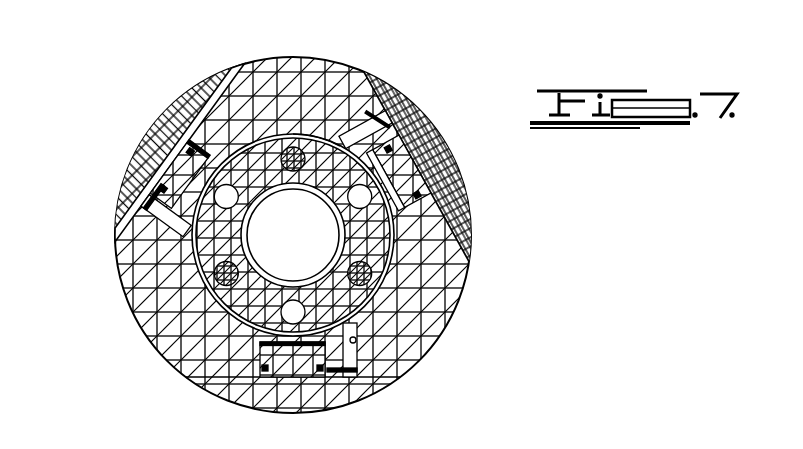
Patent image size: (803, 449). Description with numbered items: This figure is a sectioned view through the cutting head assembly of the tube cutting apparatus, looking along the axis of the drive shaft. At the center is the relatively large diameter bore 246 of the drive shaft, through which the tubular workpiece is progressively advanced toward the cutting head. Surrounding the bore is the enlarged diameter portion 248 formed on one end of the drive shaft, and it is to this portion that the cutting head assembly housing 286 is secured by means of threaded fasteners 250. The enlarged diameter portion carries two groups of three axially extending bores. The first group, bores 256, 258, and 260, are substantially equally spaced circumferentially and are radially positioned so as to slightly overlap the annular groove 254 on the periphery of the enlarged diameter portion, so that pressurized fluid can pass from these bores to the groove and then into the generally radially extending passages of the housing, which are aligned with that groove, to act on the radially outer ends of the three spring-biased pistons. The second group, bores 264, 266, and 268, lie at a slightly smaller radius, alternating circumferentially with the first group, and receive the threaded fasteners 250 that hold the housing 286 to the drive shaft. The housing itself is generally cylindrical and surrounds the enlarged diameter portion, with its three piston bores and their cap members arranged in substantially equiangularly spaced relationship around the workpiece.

The housing 286 is at (296, 146).
The bore 264 is at (304, 140).
The threaded fastener 250 is at (340, 108).
The bore 256 is at (403, 212).
The bore 266 is at (352, 342).
The bore 258 is at (262, 364).
The annular groove 254 is at (258, 344).
The bore 268 is at (280, 306).
The enlarged diameter portion 248 is at (254, 148).
The bore 246 is at (304, 194).
The bore 260 is at (228, 199).